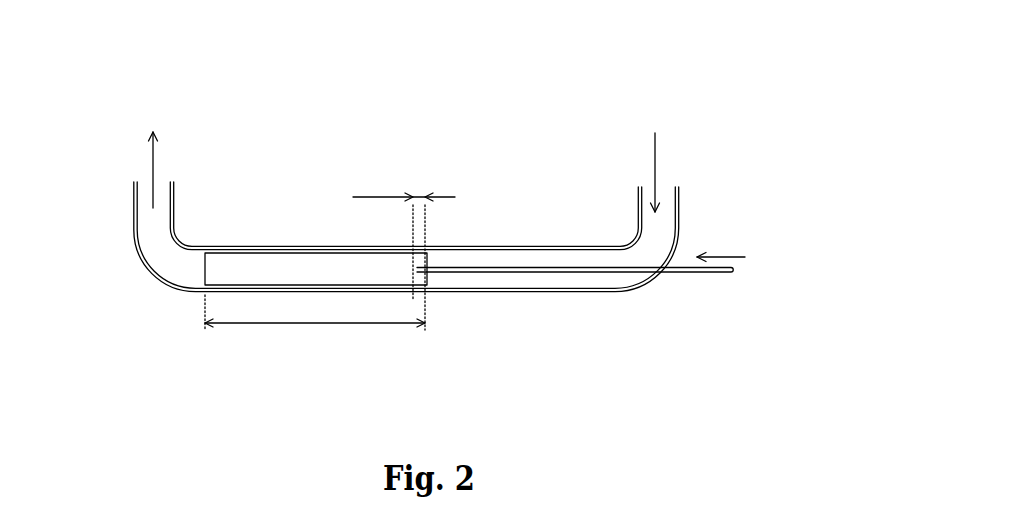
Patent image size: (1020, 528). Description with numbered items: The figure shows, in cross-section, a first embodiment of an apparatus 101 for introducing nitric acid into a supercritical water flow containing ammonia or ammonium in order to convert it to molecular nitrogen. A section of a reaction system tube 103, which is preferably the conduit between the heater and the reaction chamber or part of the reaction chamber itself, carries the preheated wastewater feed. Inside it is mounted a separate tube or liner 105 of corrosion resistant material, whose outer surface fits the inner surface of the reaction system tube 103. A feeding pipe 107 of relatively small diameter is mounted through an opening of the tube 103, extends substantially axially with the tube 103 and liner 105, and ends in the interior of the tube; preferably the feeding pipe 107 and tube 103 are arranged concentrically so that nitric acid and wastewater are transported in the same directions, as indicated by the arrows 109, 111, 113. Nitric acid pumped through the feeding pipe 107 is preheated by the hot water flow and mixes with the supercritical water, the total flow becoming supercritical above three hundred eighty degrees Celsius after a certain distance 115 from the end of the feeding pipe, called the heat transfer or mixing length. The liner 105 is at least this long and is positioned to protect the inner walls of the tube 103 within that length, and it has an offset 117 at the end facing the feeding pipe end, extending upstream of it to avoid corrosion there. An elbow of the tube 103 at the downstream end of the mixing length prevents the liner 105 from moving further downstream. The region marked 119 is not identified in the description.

The apparatus 101 is at (482, 51).
The reaction system tube 103 is at (553, 298).
The liner 105 is at (205, 268).
The feeding pipe 107 is at (687, 278).
The arrow 109 is at (720, 255).
The arrow 111 is at (653, 157).
The arrow 113 is at (150, 166).
The distance 115 is at (333, 328).
The offset 117 is at (390, 196).
The annular space 119 is at (183, 226).